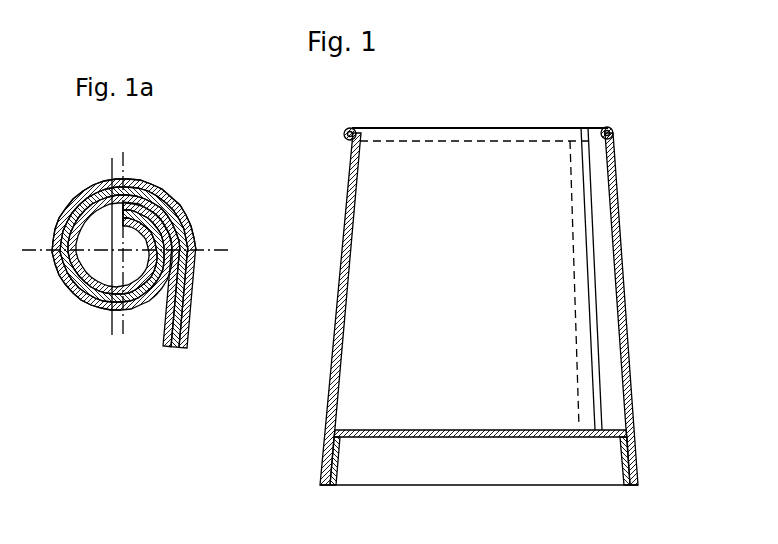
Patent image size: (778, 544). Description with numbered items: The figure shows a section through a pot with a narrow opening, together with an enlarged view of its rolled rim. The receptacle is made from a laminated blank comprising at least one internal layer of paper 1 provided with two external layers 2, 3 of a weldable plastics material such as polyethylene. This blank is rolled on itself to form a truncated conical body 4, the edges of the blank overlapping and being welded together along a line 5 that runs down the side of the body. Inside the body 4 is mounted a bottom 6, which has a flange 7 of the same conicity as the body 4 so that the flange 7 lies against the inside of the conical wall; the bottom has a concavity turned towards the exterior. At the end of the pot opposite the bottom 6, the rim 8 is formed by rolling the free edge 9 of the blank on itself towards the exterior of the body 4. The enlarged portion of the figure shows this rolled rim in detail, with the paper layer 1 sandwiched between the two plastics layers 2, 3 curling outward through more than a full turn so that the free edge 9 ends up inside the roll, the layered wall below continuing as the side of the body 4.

In FIG. 1A, the internal layer of paper 1 is at (173, 345).
In FIG. 1A, the external layer of weldable plastics material 2 is at (186, 345).
In FIG. 1A, the external layer of weldable plastics material 3 is at (165, 341).
In FIG. 1, the truncated conical body 4 is at (626, 354).
In FIG. 1, the line 5 is at (576, 256).
In FIG. 1, the bottom 6 is at (526, 439).
In FIG. 1, the flange 7 is at (479, 481).
In FIG. 1A, the rim 8 is at (67, 198).
In FIG. 1, the rim 8 is at (615, 133).
In FIG. 1A, the free edge 9 is at (121, 213).